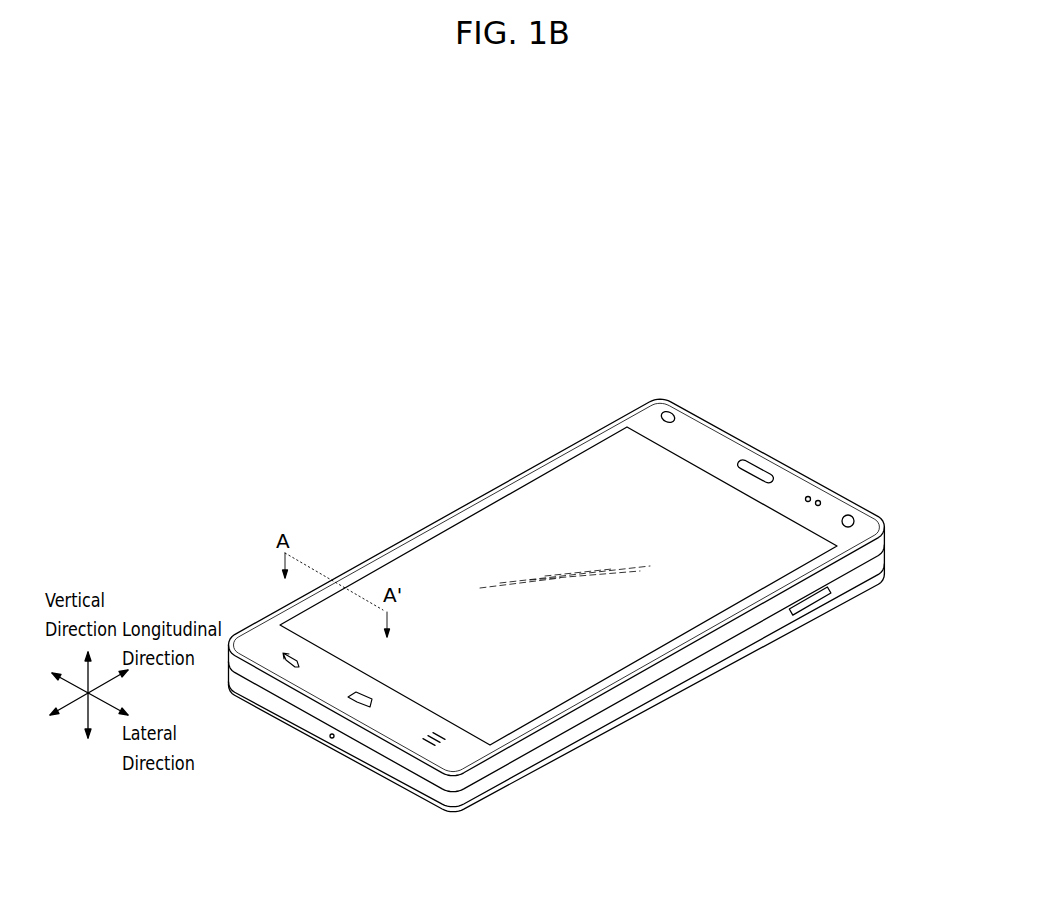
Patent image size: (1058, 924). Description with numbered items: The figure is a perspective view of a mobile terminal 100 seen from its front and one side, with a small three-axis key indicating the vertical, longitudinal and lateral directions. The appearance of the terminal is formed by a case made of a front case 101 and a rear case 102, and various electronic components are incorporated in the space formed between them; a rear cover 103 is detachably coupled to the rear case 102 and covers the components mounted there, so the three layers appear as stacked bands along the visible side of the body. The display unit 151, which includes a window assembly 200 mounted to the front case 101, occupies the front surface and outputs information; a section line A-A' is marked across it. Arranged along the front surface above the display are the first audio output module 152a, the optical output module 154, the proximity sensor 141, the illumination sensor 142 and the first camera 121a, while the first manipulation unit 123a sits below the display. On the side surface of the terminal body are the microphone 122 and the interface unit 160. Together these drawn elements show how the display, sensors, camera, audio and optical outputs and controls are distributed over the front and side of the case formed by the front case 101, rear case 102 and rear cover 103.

The mobile terminal 100 is at (440, 453).
The front case 101 is at (880, 542).
The rear case 102 is at (880, 560).
The rear cover 103 is at (873, 578).
The first camera 121a is at (853, 517).
The microphone 122 is at (331, 739).
The first manipulation unit 123a is at (428, 739).
The proximity sensor 141 is at (820, 501).
The illumination sensor 142 is at (810, 496).
The display unit 151 is at (433, 574).
The first audio output module 152a is at (754, 467).
The optical output module 154 is at (674, 412).
The interface unit 160 is at (815, 607).
The window assembly 200 is at (558, 586).